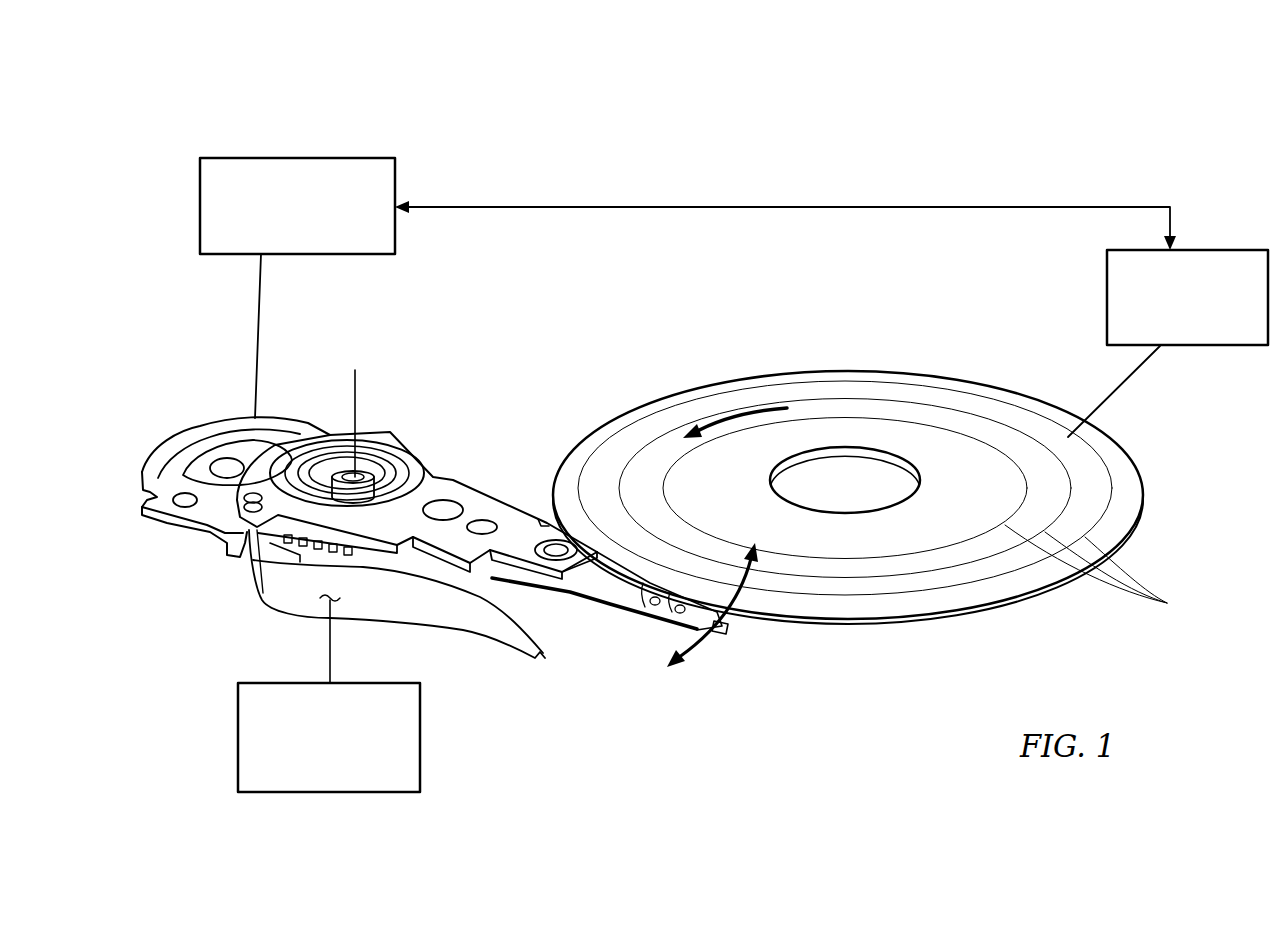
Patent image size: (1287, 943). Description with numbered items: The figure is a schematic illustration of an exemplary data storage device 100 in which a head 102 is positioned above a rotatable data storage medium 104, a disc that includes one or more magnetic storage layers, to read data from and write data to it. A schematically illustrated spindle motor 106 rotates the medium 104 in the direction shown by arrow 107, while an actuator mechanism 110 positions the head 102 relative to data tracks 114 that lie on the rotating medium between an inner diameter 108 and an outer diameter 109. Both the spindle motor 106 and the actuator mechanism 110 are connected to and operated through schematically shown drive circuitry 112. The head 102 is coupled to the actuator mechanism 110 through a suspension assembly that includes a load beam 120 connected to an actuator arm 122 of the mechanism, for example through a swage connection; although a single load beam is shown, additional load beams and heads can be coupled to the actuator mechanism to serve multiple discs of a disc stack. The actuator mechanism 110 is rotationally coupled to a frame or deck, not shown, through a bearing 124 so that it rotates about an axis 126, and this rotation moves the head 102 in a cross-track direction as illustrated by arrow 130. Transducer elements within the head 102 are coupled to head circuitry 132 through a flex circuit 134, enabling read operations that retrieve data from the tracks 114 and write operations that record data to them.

The data storage device 100 is at (1050, 142).
The head 102 is at (727, 630).
The data storage medium 104 is at (990, 388).
The spindle motor 106 is at (1228, 250).
The arrow 107 is at (743, 415).
The inner diameter 108 is at (888, 450).
The outer diameter 109 is at (853, 370).
The actuator mechanism 110 is at (381, 418).
The drive circuitry 112 is at (395, 170).
The data tracks 114 is at (1107, 574).
The load beam 120 is at (616, 575).
The actuator arm 122 is at (494, 502).
The bearing 124 is at (348, 470).
The axis 126 is at (352, 397).
The arrow 130 is at (695, 598).
The head circuitry 132 is at (420, 735).
The flex circuit 134 is at (414, 612).